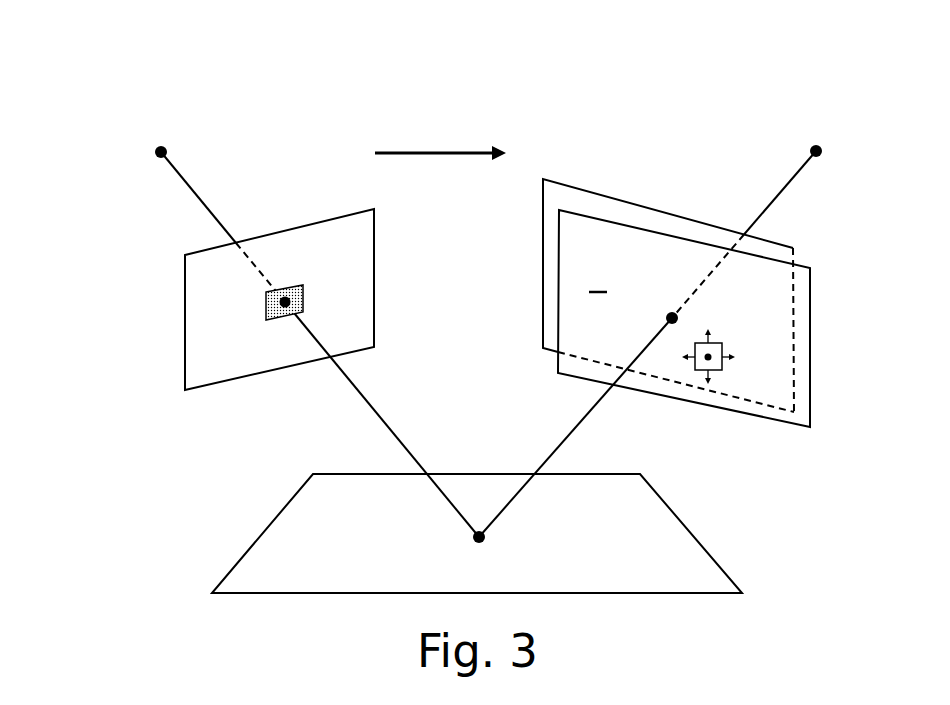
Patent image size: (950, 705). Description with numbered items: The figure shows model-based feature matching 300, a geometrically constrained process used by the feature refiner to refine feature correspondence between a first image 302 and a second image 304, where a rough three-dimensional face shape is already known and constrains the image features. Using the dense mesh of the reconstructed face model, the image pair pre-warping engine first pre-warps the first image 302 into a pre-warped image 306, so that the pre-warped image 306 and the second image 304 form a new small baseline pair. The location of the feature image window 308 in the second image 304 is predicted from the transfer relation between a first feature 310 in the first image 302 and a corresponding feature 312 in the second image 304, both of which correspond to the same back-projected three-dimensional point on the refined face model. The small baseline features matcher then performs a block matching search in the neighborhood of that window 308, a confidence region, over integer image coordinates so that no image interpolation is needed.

The model-based feature matching 300 is at (96, 45).
The image I_i 302 is at (375, 298).
The image I_i+1 304 is at (812, 393).
The pre-warped image I'_i 306 is at (620, 199).
The feature image window P-bar_j,i+1 308 is at (669, 313).
The feature P_j,i 310 is at (295, 287).
The feature P_j,i+1 312 is at (713, 363).